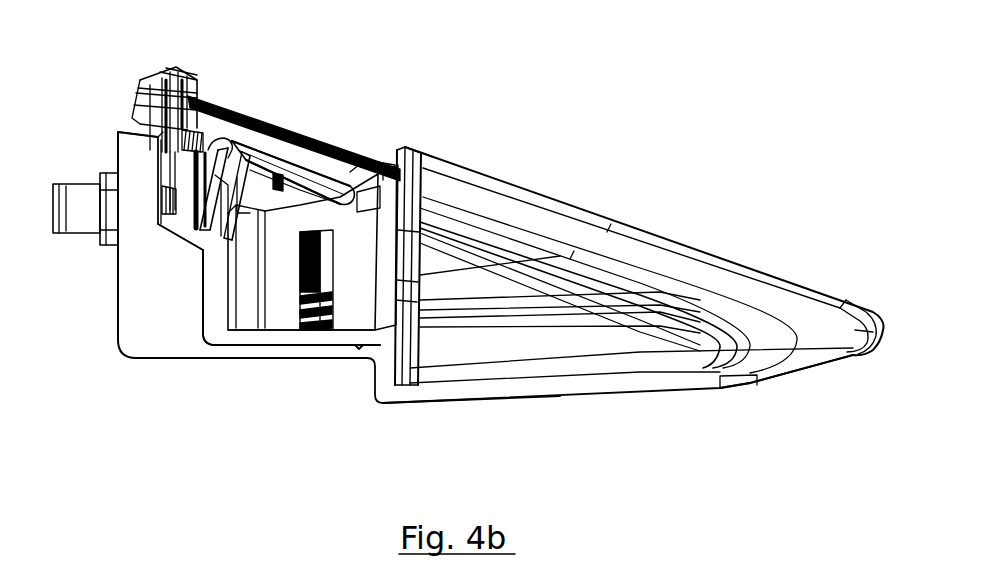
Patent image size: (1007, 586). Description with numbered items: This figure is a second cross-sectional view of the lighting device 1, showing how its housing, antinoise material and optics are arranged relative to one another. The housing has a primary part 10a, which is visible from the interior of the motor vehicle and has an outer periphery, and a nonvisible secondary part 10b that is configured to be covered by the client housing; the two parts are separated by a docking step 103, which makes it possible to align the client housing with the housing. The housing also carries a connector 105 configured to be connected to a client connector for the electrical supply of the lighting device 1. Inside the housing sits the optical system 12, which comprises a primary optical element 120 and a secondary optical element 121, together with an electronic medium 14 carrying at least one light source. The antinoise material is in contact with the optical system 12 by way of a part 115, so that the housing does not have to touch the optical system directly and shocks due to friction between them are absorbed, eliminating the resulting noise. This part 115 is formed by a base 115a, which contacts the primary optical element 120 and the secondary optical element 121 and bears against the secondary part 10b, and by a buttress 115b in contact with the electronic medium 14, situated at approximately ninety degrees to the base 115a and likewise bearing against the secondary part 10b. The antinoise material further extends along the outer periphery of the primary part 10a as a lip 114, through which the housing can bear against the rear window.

The lighting device 1 is at (300, 86).
The primary part 10a is at (553, 389).
The secondary part 10b is at (158, 291).
The optical system 12 is at (390, 72).
The electronic medium 14 is at (235, 243).
The docking step 103 is at (385, 370).
The connector 105 is at (88, 205).
The lip 114 is at (720, 276).
The part 115 is at (142, 433).
The base 115a is at (270, 343).
The buttress 115b is at (215, 272).
The primary optical element 120 is at (283, 272).
The secondary optical element 121 is at (362, 263).